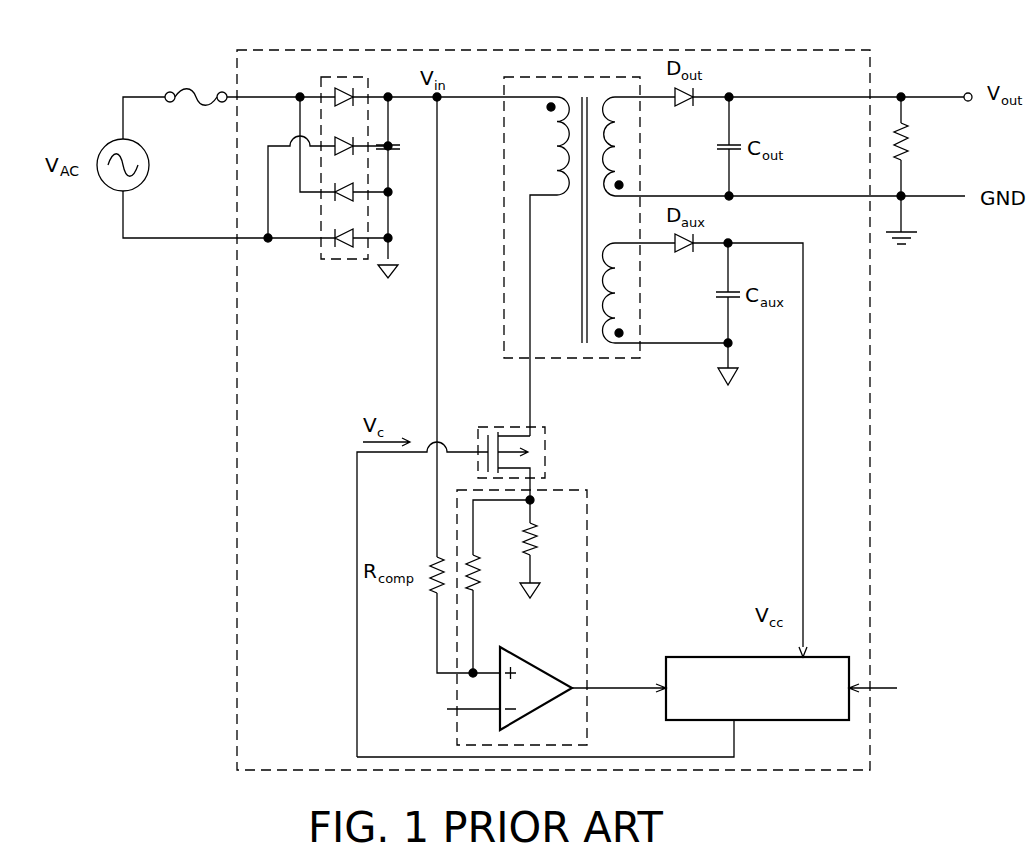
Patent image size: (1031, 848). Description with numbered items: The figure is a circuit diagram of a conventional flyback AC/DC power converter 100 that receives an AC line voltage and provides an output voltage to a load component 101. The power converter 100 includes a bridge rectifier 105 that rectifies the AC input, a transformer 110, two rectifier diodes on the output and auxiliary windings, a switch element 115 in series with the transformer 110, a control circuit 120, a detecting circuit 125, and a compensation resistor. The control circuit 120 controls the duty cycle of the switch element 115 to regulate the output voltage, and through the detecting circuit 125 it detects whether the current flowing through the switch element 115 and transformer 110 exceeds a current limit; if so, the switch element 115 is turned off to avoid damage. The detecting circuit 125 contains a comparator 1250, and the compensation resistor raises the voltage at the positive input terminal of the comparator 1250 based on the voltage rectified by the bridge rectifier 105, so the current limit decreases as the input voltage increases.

The power converter 100 is at (237, 410).
The load component 101 is at (907, 150).
The bridge rectifier 105 is at (353, 77).
The transformer 110 is at (573, 77).
The switch element 115 is at (513, 427).
The control circuit 120 is at (708, 657).
The detecting circuit 125 is at (587, 585).
The comparator 1250 is at (533, 662).